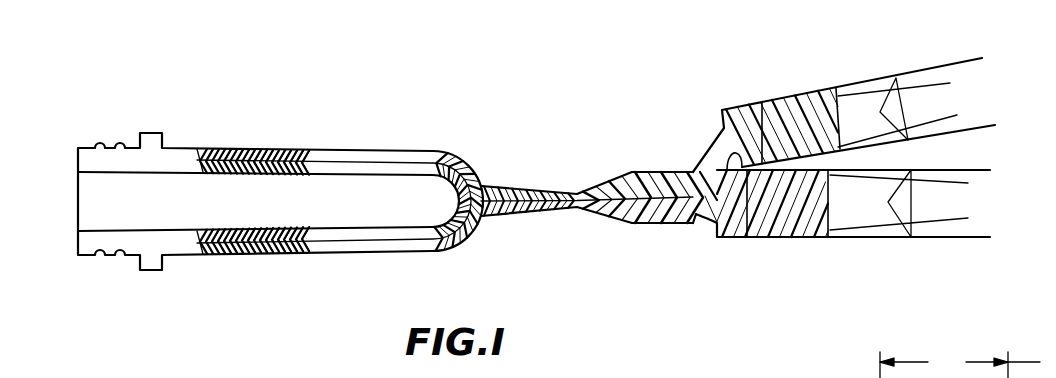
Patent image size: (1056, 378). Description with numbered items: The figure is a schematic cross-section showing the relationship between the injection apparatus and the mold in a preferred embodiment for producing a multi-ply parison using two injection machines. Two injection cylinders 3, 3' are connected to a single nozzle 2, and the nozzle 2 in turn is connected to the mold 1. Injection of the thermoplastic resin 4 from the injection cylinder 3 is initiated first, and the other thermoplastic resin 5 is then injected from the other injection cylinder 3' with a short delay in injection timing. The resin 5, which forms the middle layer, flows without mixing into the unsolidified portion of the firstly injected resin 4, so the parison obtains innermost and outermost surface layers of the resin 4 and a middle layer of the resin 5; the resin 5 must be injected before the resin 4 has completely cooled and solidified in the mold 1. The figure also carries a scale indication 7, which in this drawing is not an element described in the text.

The mold 1 is at (167, 256).
The nozzle 2 is at (576, 192).
The injection cylinder 3 is at (844, 136).
The injection cylinder 3' is at (841, 223).
The thermoplastic resin 4 is at (214, 148).
The thermoplastic resin 5 is at (455, 164).
The scale bar 7 is at (960, 365).